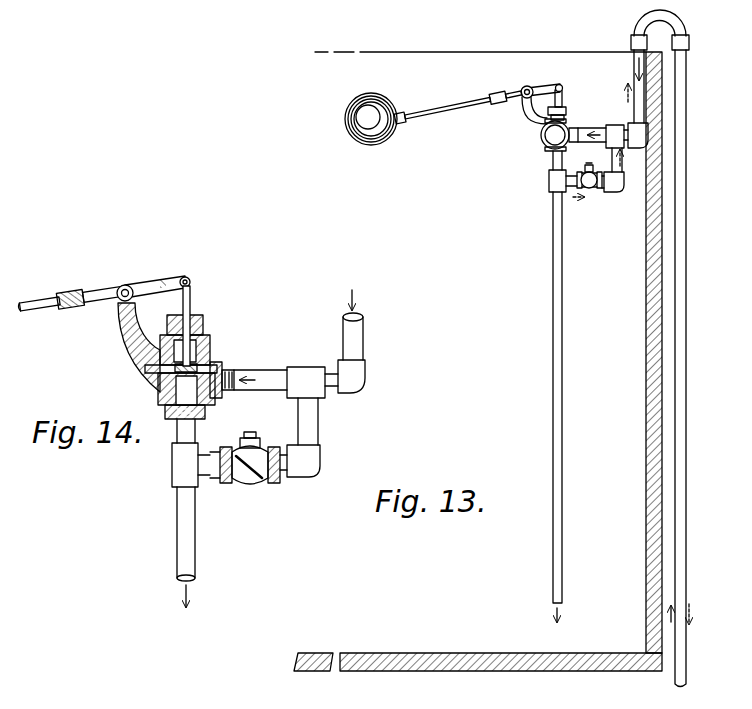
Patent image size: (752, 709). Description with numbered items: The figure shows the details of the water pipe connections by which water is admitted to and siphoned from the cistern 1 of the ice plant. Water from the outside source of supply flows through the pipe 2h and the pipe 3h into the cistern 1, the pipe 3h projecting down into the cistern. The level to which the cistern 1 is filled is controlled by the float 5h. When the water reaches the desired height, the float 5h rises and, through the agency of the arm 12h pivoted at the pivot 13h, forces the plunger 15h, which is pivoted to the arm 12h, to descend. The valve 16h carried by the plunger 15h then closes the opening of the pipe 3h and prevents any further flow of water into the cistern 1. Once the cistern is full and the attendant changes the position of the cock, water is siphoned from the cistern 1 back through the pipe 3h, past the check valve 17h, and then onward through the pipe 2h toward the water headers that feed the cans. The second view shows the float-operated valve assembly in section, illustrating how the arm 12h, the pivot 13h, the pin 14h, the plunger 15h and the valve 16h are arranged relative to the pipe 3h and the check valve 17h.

In FIG. 13, the cistern 1 is at (447, 653).
In FIG. 13, the pipe 2h is at (683, 508).
In FIG. 13, the pipe 3h is at (560, 364).
In FIG. 14, the pipe 3h is at (200, 527).
In FIG. 13, the float 5h is at (352, 113).
In FIG. 13, the arm 12h is at (479, 97).
In FIG. 14, the arm 12h is at (42, 299).
In FIG. 13, the pivot 13h is at (528, 87).
In FIG. 14, the pivot 13h is at (127, 288).
In FIG. 13, the pivot pin 14h is at (562, 86).
In FIG. 14, the pivot pin 14h is at (191, 280).
In FIG. 13, the plunger 15h is at (564, 102).
In FIG. 14, the plunger 15h is at (191, 300).
In FIG. 14, the valve 16h is at (210, 362).
In FIG. 13, the check valve 17h is at (589, 190).
In FIG. 14, the check valve 17h is at (252, 456).